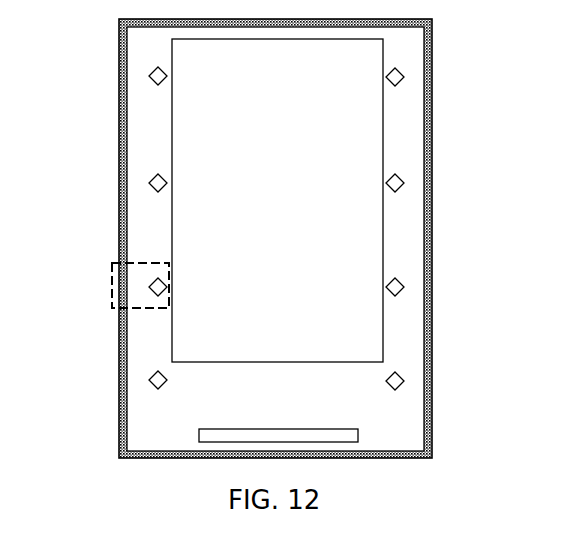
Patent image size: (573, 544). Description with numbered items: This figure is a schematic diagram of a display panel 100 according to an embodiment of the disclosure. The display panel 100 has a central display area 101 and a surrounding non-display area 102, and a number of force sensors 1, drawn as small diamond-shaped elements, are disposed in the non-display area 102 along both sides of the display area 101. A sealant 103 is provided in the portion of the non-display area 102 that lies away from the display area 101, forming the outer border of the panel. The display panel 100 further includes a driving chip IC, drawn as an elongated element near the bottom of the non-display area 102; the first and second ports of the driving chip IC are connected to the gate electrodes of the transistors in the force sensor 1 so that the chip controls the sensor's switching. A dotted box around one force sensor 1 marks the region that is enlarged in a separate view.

The display panel 100 is at (487, 44).
The force sensor 1 is at (152, 75).
The display area 101 is at (197, 160).
The non-display area 102 is at (166, 250).
The sealant 103 is at (122, 334).
The driving chip IC is at (348, 436).